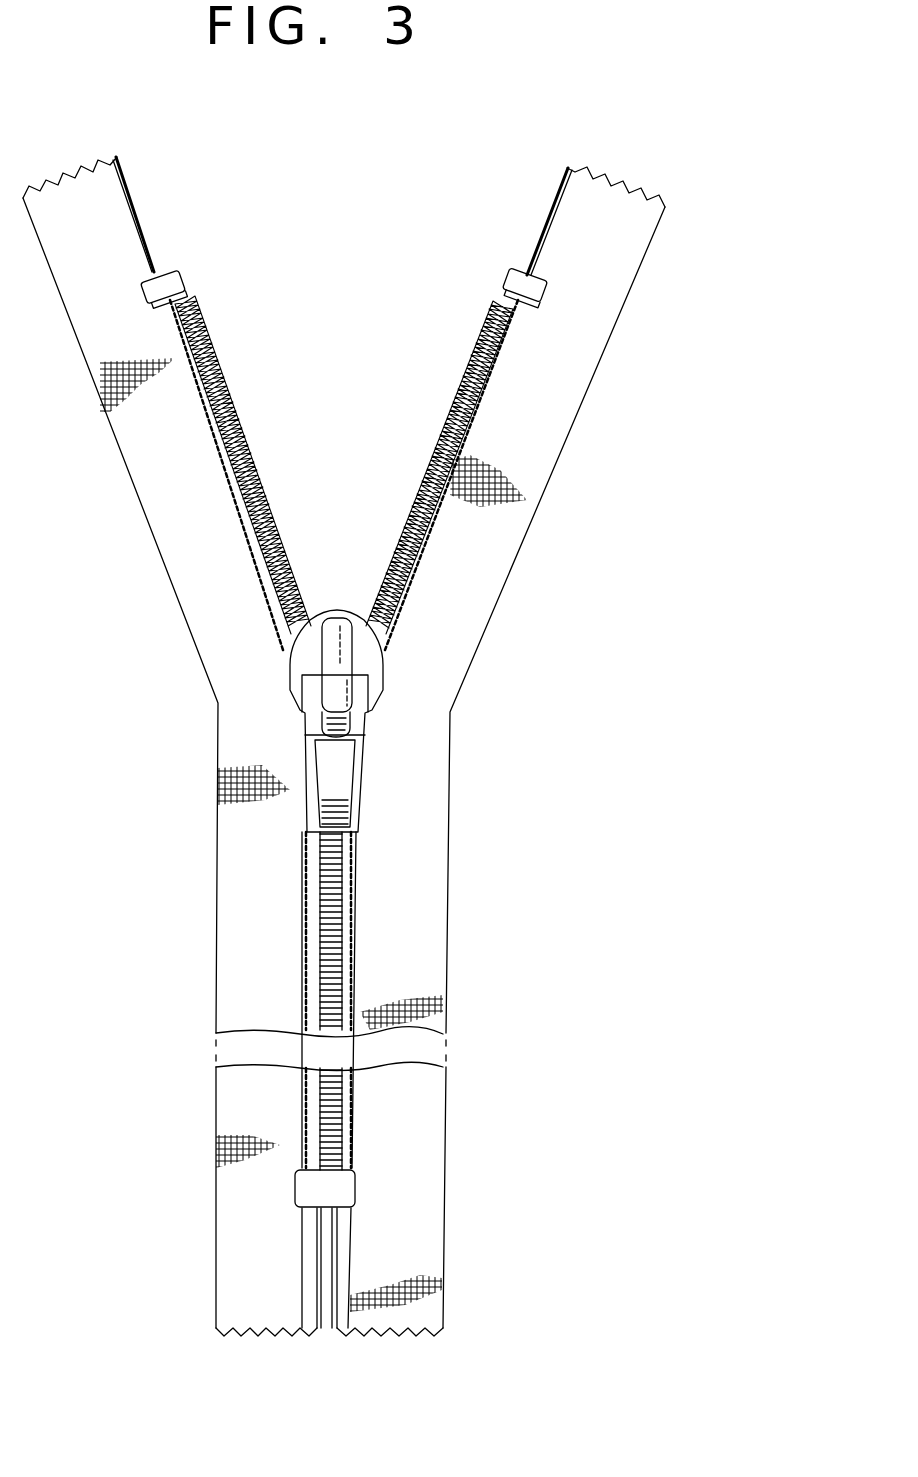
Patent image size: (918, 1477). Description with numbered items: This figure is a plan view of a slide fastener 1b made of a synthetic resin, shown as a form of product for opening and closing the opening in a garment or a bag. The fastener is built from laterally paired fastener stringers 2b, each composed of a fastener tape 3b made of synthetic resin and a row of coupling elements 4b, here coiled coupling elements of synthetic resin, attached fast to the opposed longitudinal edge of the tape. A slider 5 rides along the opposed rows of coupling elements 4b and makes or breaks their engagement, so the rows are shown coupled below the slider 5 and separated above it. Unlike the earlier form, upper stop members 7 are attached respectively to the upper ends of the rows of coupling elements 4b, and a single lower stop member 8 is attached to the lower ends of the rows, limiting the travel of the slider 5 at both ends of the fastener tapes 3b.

The slide fastener 1b is at (482, 670).
The fastener stringers 2b is at (72, 170).
The fastener tapes 3b is at (226, 905).
The rows of coupling elements 4b is at (433, 442).
The slider 5 is at (374, 731).
The upper stop members 7 is at (182, 280).
The lower stop member 8 is at (345, 1185).